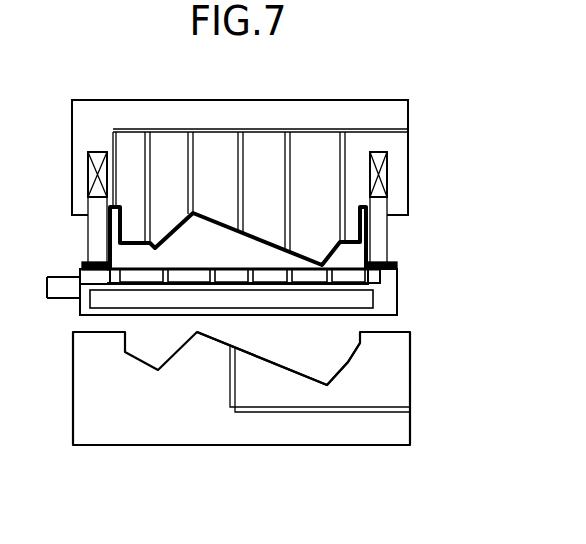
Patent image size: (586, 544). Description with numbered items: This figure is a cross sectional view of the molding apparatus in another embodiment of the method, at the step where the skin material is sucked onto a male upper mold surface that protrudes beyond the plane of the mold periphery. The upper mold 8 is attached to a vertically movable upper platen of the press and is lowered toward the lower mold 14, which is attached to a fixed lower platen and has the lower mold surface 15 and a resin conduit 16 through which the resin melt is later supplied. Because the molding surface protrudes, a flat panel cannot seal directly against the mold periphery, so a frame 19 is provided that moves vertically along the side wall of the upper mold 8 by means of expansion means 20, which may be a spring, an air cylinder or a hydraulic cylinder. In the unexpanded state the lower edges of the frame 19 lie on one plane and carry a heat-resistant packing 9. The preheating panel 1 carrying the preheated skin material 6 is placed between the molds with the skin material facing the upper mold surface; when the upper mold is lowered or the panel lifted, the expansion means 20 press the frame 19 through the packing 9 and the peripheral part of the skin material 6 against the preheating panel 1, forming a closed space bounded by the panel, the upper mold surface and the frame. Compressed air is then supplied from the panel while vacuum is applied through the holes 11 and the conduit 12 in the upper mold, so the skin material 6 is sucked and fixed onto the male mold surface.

The preheating panel 1 is at (397, 287).
The skin material 6 is at (345, 247).
The upper mold 8 is at (408, 153).
The heat-resistant packing 9 is at (100, 262).
The holes 11 is at (147, 168).
The conduit 12 is at (308, 129).
The lower mold 14 is at (410, 423).
The lower mold surface 15 is at (348, 362).
The resin conduit 16 is at (317, 412).
The frame 19 is at (88, 210).
The expansion means 20 is at (383, 180).